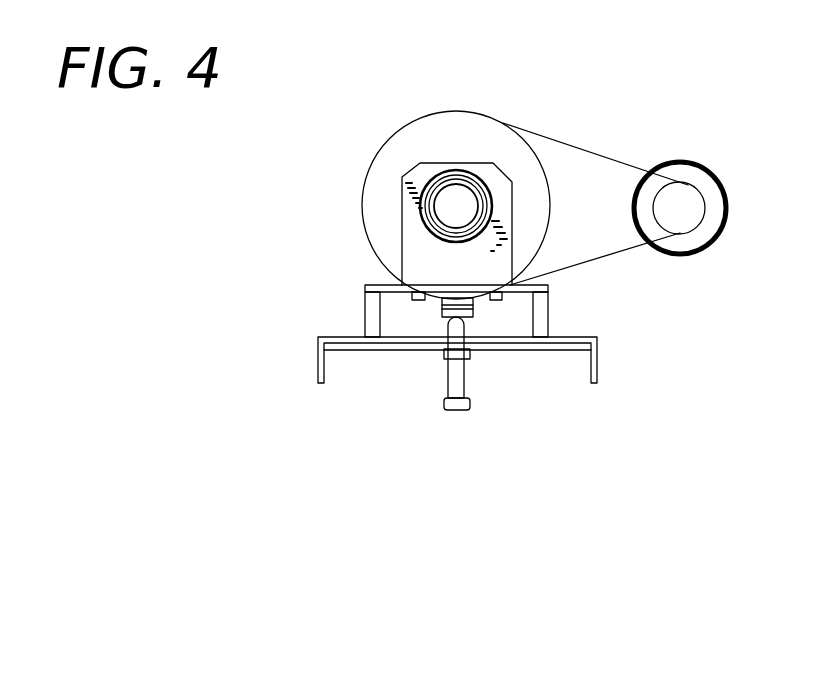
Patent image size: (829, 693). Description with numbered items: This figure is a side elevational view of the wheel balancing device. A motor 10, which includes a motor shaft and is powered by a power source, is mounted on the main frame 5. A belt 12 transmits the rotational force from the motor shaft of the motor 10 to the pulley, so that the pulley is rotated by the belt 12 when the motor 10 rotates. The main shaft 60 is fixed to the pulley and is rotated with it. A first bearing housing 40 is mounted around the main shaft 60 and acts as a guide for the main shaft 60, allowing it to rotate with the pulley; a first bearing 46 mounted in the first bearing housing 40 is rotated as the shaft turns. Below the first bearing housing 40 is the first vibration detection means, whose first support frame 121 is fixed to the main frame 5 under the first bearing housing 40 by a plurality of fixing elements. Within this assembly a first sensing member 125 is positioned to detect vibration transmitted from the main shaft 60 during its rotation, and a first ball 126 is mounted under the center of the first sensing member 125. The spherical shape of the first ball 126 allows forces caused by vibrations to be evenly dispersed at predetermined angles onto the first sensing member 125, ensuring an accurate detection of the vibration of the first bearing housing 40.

The main frame 5 is at (318, 378).
The motor 10 is at (688, 158).
The belt 12 is at (585, 148).
The first bearing housing 40 is at (400, 174).
The first bearing 46 is at (474, 172).
The main shaft 60 is at (455, 205).
The first support frame 121 is at (363, 284).
The first sensing member 125 is at (438, 320).
The first ball 126 is at (463, 320).